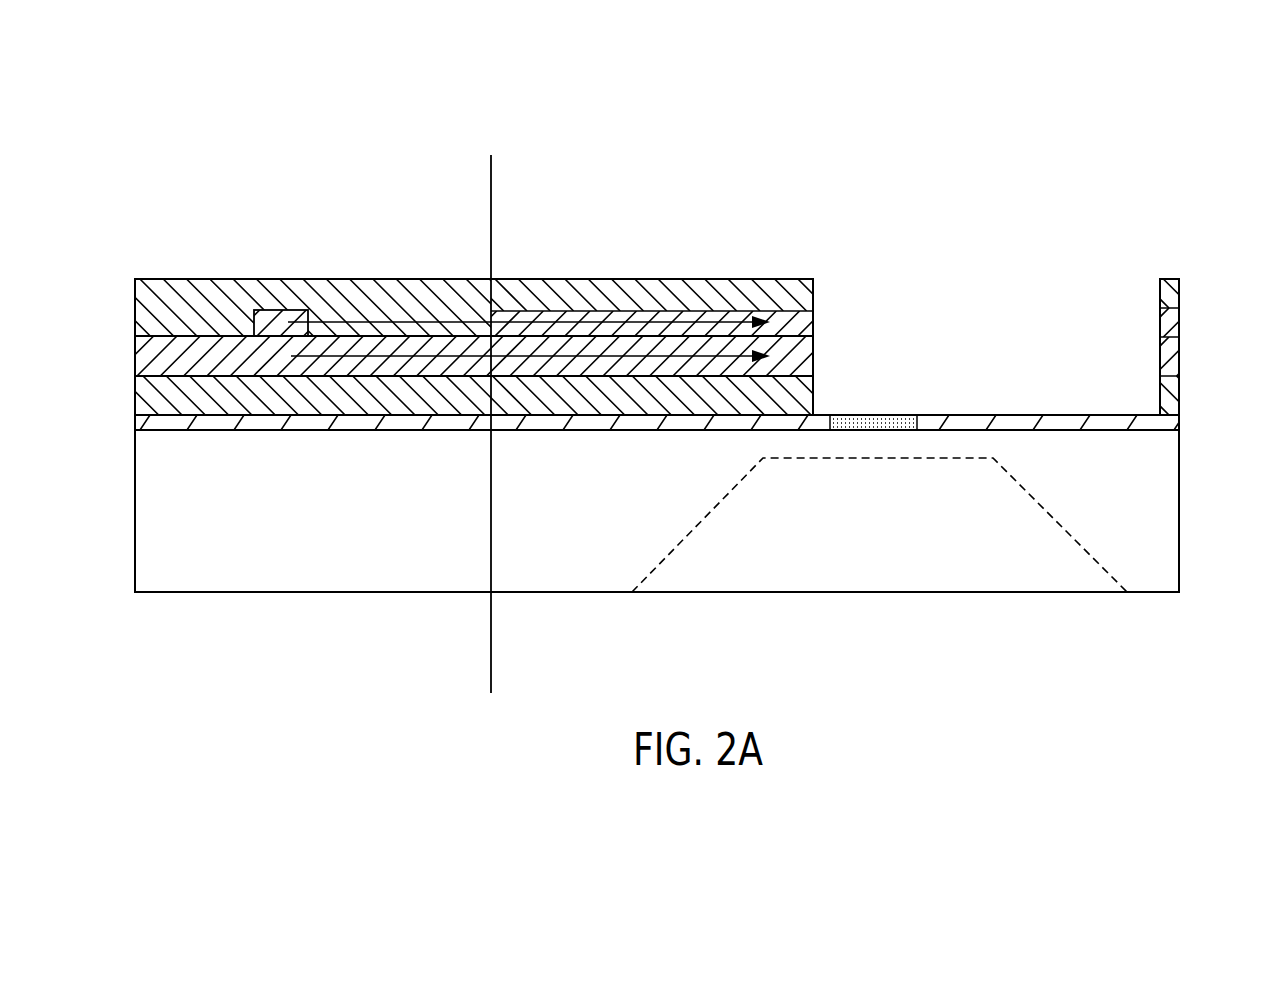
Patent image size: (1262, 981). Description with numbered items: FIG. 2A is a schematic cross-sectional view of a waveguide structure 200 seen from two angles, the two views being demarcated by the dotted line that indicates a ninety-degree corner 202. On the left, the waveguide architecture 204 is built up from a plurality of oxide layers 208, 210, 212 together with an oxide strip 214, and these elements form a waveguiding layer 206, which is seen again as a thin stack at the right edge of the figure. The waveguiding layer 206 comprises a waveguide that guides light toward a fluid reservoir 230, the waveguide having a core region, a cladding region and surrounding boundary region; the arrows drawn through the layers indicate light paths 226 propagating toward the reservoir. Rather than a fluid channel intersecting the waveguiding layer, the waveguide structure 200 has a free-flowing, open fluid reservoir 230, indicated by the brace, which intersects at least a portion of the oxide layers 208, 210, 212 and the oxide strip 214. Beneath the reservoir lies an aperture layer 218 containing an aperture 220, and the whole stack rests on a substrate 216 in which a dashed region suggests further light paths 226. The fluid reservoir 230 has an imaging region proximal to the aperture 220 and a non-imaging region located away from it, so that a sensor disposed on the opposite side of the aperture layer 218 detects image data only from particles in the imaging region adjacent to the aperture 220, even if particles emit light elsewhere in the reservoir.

The waveguide structure 200 is at (1190, 155).
The 90° corner 202 is at (492, 203).
The waveguide architecture 204 is at (482, 602).
The waveguiding layer 206 is at (1190, 280).
The oxide layer 208 is at (148, 400).
The oxide layer 210 is at (148, 357).
The oxide layer 212 is at (148, 304).
The oxide strip 214 is at (285, 316).
The substrate 216 is at (1172, 507).
The aperture layer 218 is at (1167, 423).
The aperture 220 is at (860, 413).
The light path 226 is at (1112, 583).
The fluid reservoir 230 is at (1158, 265).